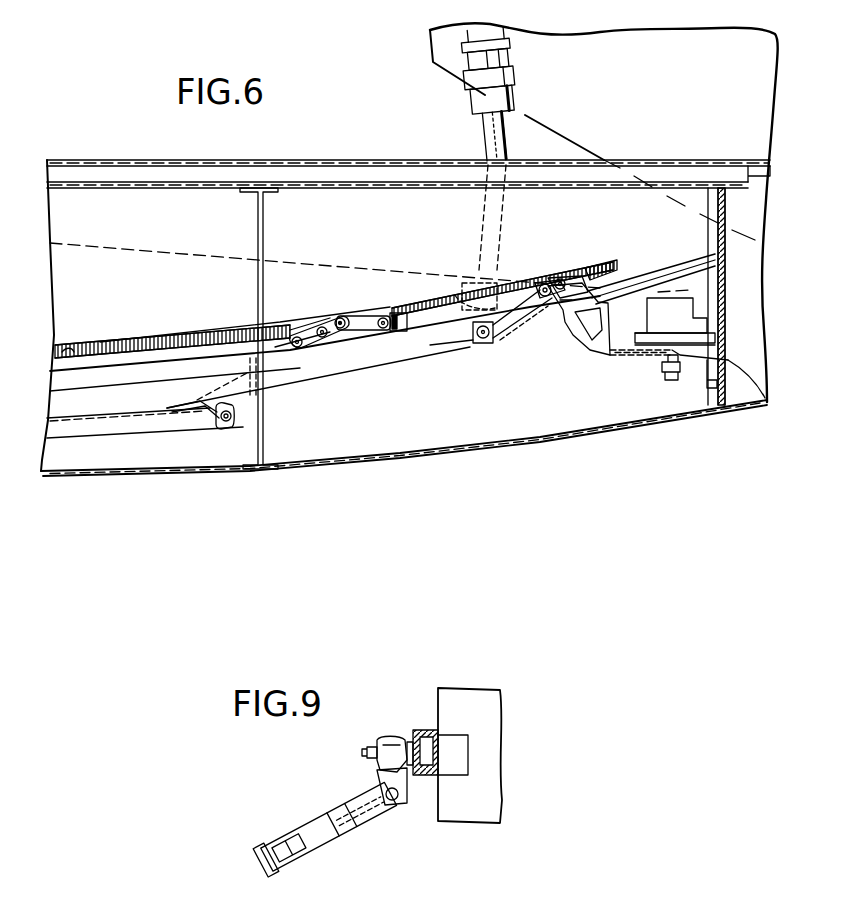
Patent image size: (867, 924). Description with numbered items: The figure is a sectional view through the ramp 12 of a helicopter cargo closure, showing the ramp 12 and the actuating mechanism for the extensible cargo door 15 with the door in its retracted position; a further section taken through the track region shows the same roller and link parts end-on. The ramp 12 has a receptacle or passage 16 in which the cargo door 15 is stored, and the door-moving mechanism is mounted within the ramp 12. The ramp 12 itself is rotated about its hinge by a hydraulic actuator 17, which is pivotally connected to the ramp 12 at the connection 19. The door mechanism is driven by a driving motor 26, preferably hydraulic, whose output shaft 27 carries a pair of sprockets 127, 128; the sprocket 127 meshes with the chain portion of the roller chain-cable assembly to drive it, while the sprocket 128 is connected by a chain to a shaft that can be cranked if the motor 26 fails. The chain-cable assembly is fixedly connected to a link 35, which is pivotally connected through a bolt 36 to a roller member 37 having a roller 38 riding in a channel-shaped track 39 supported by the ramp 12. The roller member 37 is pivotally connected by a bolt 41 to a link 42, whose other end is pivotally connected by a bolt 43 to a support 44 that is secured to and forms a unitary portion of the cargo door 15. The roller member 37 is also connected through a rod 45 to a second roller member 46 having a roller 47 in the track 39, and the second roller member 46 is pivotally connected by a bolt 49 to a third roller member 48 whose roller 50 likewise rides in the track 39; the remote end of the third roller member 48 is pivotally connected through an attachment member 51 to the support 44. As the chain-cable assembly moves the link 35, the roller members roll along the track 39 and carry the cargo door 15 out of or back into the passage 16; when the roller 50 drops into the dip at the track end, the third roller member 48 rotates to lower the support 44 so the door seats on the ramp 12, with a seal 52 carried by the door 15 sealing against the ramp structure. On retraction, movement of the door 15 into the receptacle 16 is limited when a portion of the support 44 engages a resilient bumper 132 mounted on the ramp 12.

In FIG. 6, the ramp 12 is at (440, 460).
In FIG. 9, the ramp 12 is at (452, 690).
In FIG. 6, the cargo door 15 is at (77, 447).
In FIG. 6, the receptacle or passage 16 is at (163, 470).
In FIG. 6, the hydraulic actuator 17 is at (496, 143).
In FIG. 6, the pivotal connection of hydraulic actuator to ramp 19 is at (475, 280).
In FIG. 6, the driving motor 26 is at (690, 312).
In FIG. 6, the output shaft 27 is at (700, 385).
In FIG. 6, the link 35 is at (590, 350).
In FIG. 9, the link 35 is at (350, 835).
In FIG. 6, the bolt 36 is at (642, 283).
In FIG. 9, the bolt 36 is at (400, 805).
In FIG. 6, the roller member 37 is at (565, 280).
In FIG. 9, the roller member 37 is at (375, 772).
In FIG. 6, the roller 38 is at (545, 283).
In FIG. 6, the track 39 is at (80, 345).
In FIG. 9, the track 39 is at (428, 733).
In FIG. 6, the bolt 41 is at (538, 312).
In FIG. 6, the link 42 is at (486, 340).
In FIG. 6, the bolt 43 is at (478, 345).
In FIG. 6, the support 44 is at (344, 381).
In FIG. 6, the rod 45 is at (420, 312).
In FIG. 6, the second roller member 46 is at (372, 343).
In FIG. 6, the roller 47 is at (375, 314).
In FIG. 6, the third roller member 48 is at (295, 338).
In FIG. 6, the bolt 49 is at (337, 317).
In FIG. 6, the roller 50 is at (315, 330).
In FIG. 6, the attachment member 51 is at (235, 332).
In FIG. 6, the seal 52 is at (232, 429).
In FIG. 6, the sprocket 127 is at (758, 398).
In FIG. 6, the sprocket 128 is at (672, 380).
In FIG. 6, the resilient bumper 132 is at (250, 397).